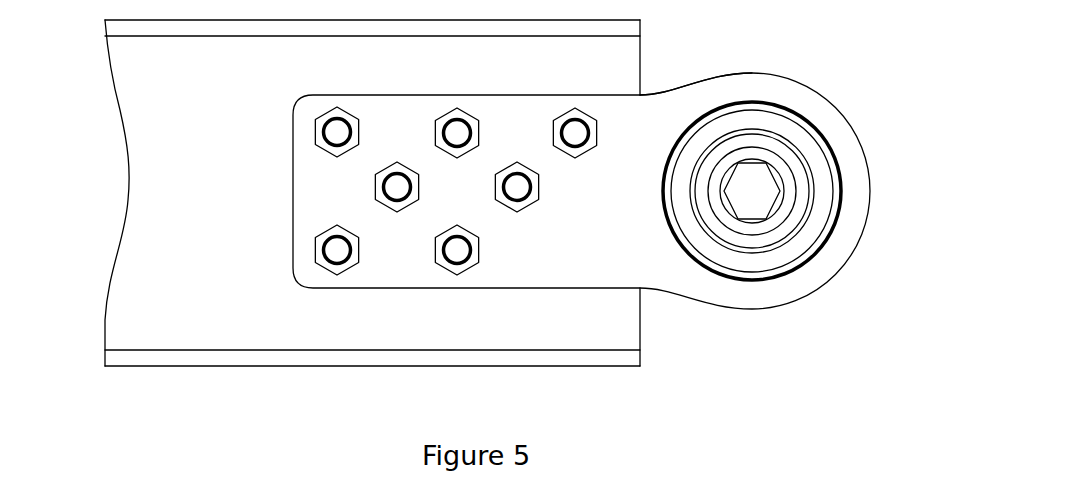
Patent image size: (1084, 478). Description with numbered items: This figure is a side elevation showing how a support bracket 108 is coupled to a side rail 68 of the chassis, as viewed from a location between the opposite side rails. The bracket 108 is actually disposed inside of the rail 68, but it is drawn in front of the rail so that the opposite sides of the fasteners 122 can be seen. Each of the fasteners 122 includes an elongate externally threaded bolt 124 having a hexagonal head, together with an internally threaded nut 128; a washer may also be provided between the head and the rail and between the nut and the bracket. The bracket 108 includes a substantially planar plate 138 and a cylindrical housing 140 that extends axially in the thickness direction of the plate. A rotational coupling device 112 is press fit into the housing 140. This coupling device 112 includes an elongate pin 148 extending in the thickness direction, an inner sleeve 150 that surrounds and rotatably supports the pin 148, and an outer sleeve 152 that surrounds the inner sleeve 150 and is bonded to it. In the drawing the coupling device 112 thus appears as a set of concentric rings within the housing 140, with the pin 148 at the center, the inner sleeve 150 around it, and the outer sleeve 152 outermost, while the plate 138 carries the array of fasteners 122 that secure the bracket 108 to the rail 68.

The rail 68 is at (143, 152).
The bracket 108 is at (305, 197).
The coupling device 112 is at (773, 128).
The fasteners 122 is at (453, 262).
The bolt 124 is at (337, 130).
The nut 128 is at (573, 108).
The plate 138 is at (652, 108).
The cylindrical housing 140 is at (753, 265).
The pin 148 is at (757, 182).
The inner sleeve 150 is at (807, 188).
The outer sleeve 152 is at (797, 235).